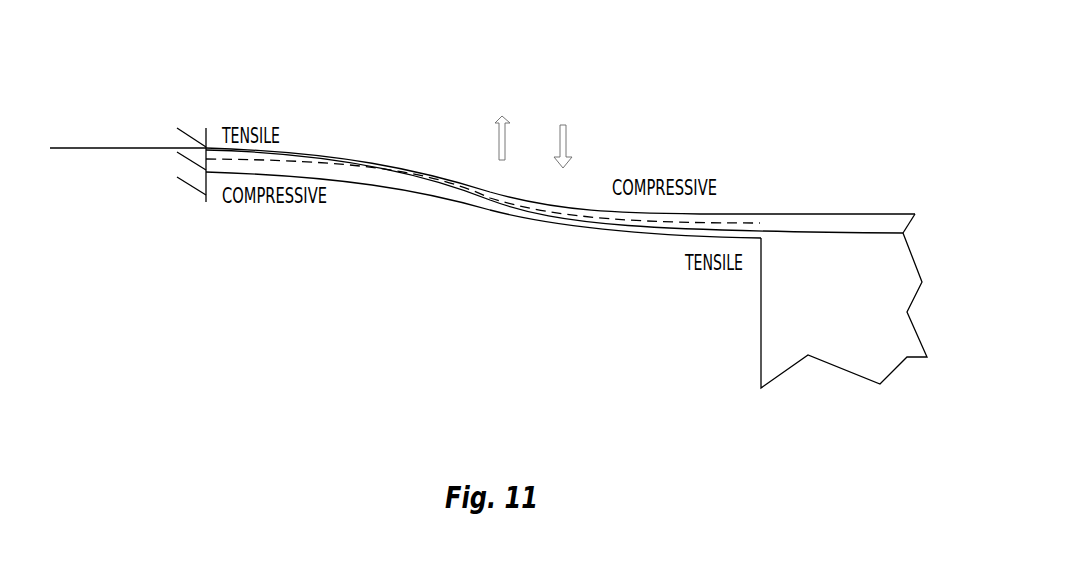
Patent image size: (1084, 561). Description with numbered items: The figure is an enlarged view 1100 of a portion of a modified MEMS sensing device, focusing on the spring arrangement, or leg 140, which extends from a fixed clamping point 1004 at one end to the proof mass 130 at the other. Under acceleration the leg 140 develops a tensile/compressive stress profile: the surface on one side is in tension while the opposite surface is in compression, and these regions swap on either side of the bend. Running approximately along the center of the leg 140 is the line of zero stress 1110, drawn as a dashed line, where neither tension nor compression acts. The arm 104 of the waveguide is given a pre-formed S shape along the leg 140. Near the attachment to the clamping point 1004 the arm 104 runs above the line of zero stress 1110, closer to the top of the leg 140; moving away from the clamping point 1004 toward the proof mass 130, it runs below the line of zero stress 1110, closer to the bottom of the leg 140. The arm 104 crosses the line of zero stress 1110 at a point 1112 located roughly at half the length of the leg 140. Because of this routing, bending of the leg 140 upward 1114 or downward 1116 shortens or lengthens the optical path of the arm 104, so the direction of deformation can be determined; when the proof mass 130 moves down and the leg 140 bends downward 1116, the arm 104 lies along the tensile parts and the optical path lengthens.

The clamping point 1004 is at (207, 136).
The arm of the waveguide 104 is at (838, 232).
The crossing point 1112 is at (538, 210).
The leg 140 is at (408, 187).
The line of zero stress 1110 is at (343, 165).
The proof mass 130 is at (820, 325).
The upward deformation direction 1114 is at (495, 135).
The downward deformation direction 1116 is at (570, 135).
The enlarged view 1100 is at (725, 75).